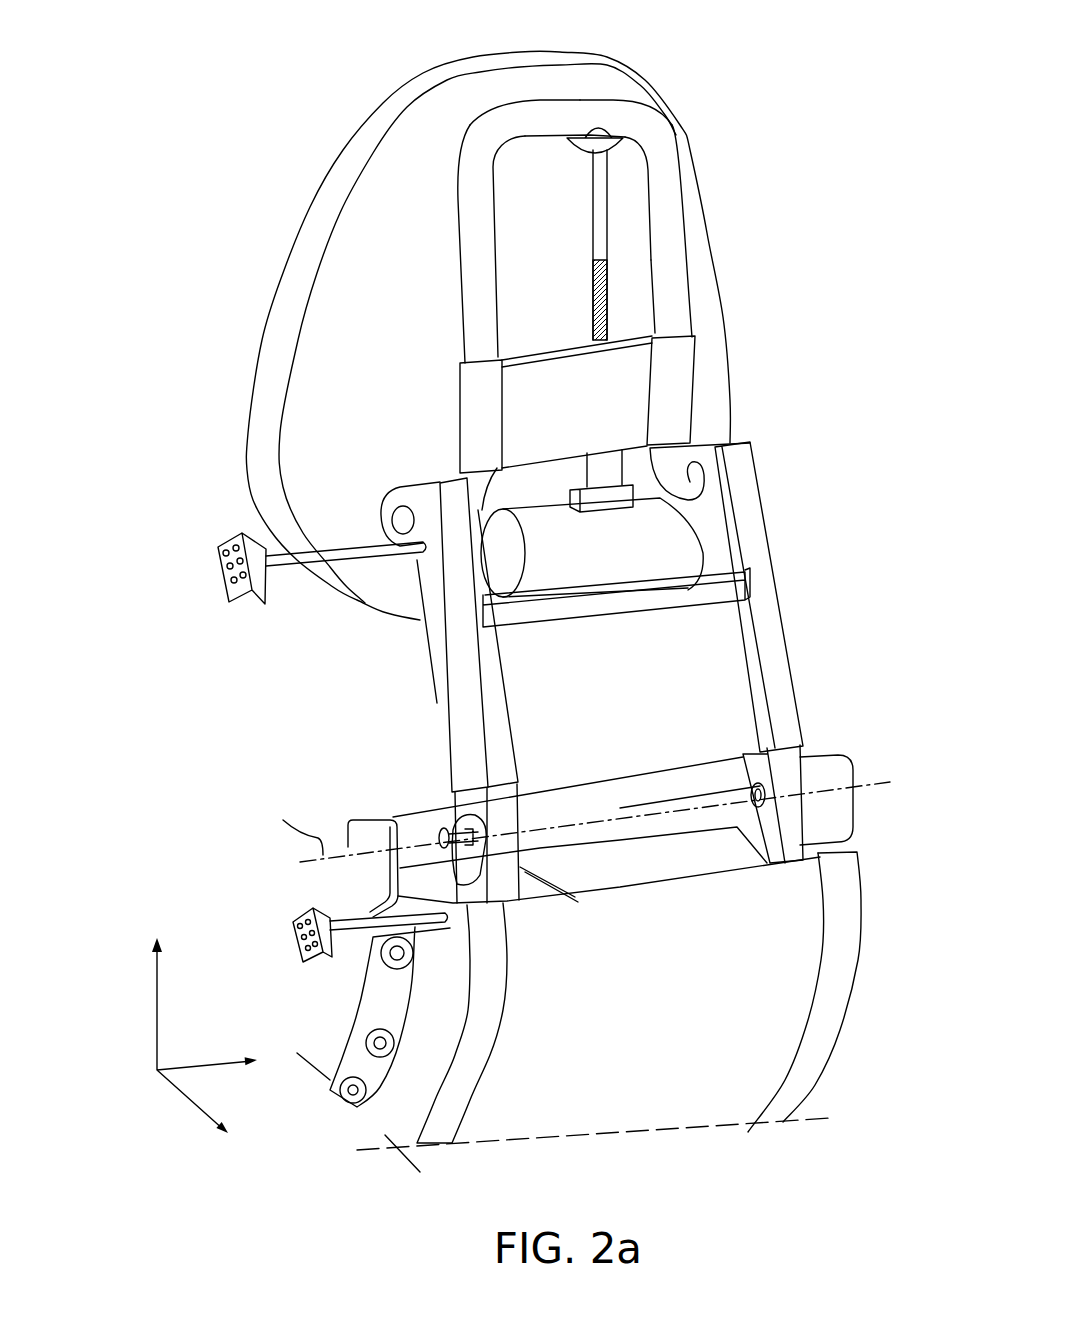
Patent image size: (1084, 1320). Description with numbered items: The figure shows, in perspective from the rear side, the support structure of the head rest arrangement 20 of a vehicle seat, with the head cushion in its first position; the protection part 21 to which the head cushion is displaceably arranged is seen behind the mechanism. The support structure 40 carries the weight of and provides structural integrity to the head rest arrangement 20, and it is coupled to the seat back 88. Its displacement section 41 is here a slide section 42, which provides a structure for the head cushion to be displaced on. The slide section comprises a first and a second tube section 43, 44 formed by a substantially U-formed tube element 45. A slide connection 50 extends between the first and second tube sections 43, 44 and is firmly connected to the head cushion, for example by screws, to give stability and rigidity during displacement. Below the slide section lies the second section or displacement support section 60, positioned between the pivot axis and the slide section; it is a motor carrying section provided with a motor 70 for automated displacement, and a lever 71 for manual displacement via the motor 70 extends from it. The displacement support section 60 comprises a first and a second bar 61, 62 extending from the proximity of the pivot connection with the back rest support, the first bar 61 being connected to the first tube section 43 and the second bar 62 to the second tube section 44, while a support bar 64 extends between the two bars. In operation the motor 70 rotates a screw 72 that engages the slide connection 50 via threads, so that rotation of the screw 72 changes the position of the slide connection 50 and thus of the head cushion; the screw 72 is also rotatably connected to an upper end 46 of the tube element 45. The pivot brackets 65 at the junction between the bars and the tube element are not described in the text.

The head rest arrangement 20 is at (797, 170).
The protection part 21 is at (318, 390).
The support structure 40 is at (800, 504).
The displacement section 41 is at (677, 290).
The slide section 42 is at (477, 303).
The first tube section 43 is at (473, 210).
The second tube section 44 is at (670, 160).
The substantially U-formed tube element 45 is at (623, 107).
The upper end 46 is at (512, 120).
The slide connection 50 is at (542, 390).
The displacement support section 60 is at (790, 641).
The first bar 61 is at (455, 690).
The second bar 62 is at (775, 558).
The support bar 64 is at (662, 587).
The pivot bracket 65 is at (447, 477).
The motor 70 is at (557, 557).
The lever 71 is at (260, 580).
The screw 72 is at (593, 299).
The seat back 88 is at (790, 818).